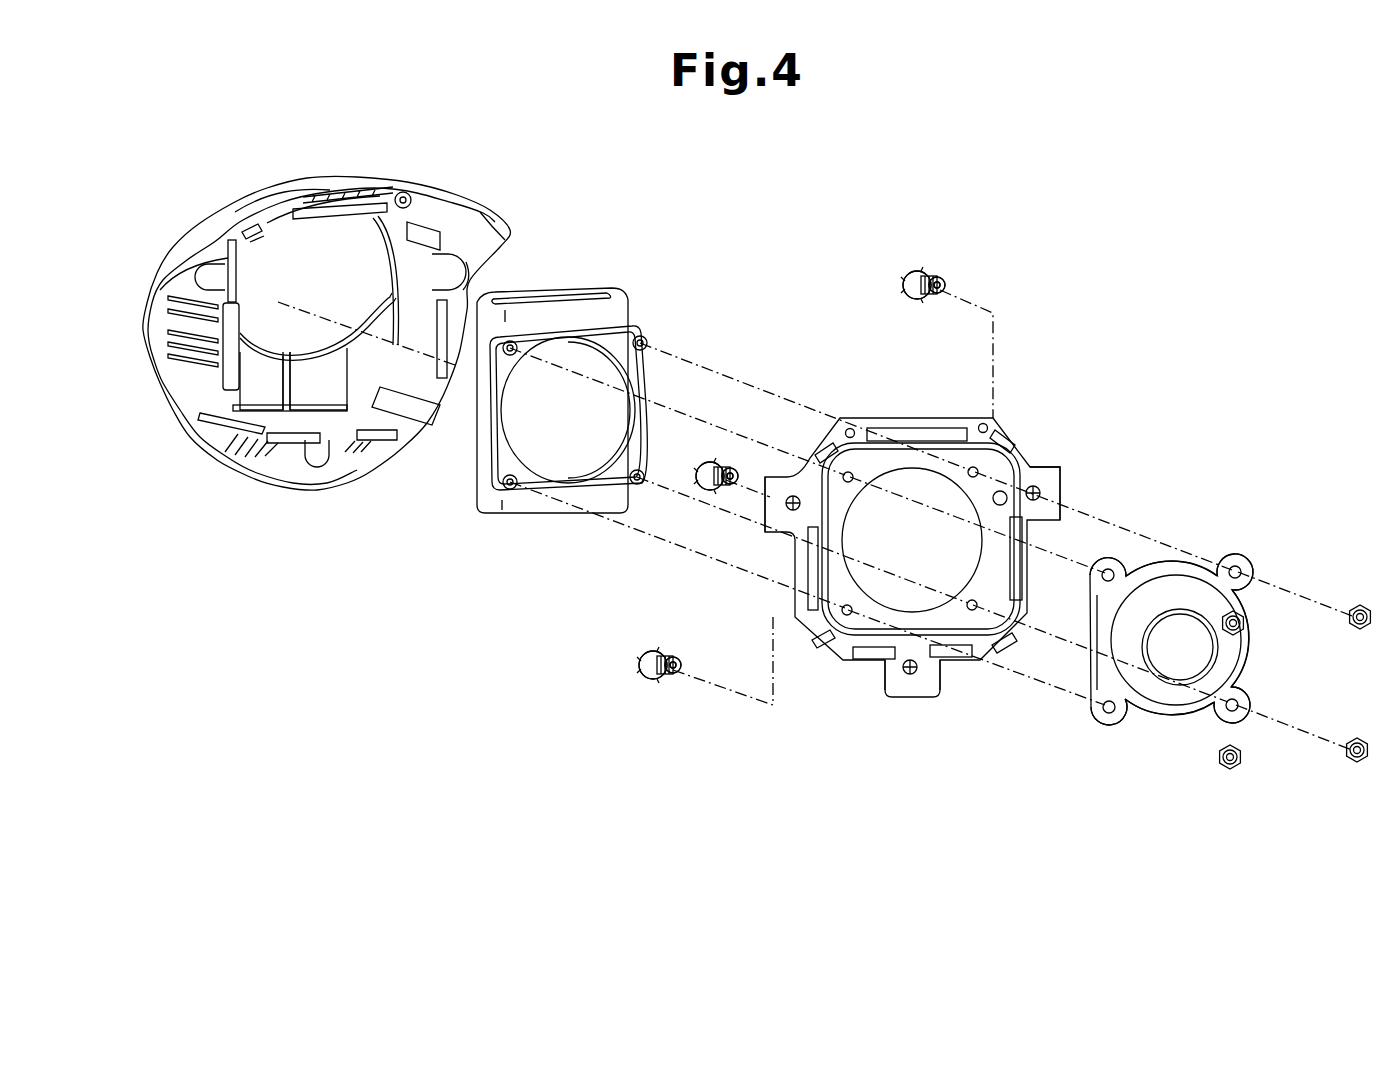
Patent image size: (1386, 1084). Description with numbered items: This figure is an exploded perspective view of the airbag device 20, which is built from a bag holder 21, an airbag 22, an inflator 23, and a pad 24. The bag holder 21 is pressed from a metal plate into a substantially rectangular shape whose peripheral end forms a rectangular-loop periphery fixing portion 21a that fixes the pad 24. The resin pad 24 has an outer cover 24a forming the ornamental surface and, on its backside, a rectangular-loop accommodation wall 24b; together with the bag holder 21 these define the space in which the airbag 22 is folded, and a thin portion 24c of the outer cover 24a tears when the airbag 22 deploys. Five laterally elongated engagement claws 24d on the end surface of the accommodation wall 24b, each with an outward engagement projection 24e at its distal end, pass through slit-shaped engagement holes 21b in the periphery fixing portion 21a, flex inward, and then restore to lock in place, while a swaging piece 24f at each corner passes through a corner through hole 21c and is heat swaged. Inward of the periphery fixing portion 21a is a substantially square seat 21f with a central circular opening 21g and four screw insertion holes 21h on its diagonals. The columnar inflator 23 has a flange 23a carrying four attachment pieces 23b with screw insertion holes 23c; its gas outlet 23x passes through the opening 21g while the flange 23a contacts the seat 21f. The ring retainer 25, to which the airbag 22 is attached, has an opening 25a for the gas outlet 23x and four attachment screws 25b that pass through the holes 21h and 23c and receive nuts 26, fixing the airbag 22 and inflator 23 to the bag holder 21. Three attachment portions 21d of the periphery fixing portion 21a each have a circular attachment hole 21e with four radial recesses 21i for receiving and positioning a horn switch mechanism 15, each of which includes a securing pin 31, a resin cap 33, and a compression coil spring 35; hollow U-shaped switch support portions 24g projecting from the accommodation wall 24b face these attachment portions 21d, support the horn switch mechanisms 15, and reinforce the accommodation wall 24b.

The airbag device 20 is at (827, 207).
The bag holder 21 is at (998, 430).
The periphery fixing portion 21a is at (858, 445).
The engagement holes 21b is at (947, 428).
The through holes 21c is at (828, 450).
The attachment portions 21d is at (1053, 467).
The attachment hole 21e is at (795, 496).
The seat 21f is at (850, 428).
The opening 21g is at (847, 550).
The screw insertion holes 21h is at (973, 477).
The recesses 21i is at (1008, 498).
The airbag 22 is at (623, 293).
The inflator 23 is at (1186, 580).
The flange 23a is at (1160, 563).
The attachment pieces 23b is at (1120, 574).
The screw insertion holes 23c is at (1236, 565).
The gas outlet 23x is at (1148, 645).
The pad 24 is at (397, 180).
The outer cover 24a is at (215, 212).
The accommodation wall 24b is at (496, 217).
The thin portion 24c is at (280, 348).
The engagement claws 24d is at (333, 218).
The engagement projection 24e is at (360, 200).
The swaging piece 24f is at (410, 200).
The switch support portions 24g is at (180, 270).
The ring retainer 25 is at (590, 333).
The opening 25a is at (515, 448).
The attachment screws 25b is at (643, 338).
The nuts 26 is at (1248, 620).
The horn switch mechanisms 15 is at (912, 270).
The securing pin 31 is at (937, 295).
The cap 33 is at (903, 285).
The compression coil spring 35 is at (943, 283).